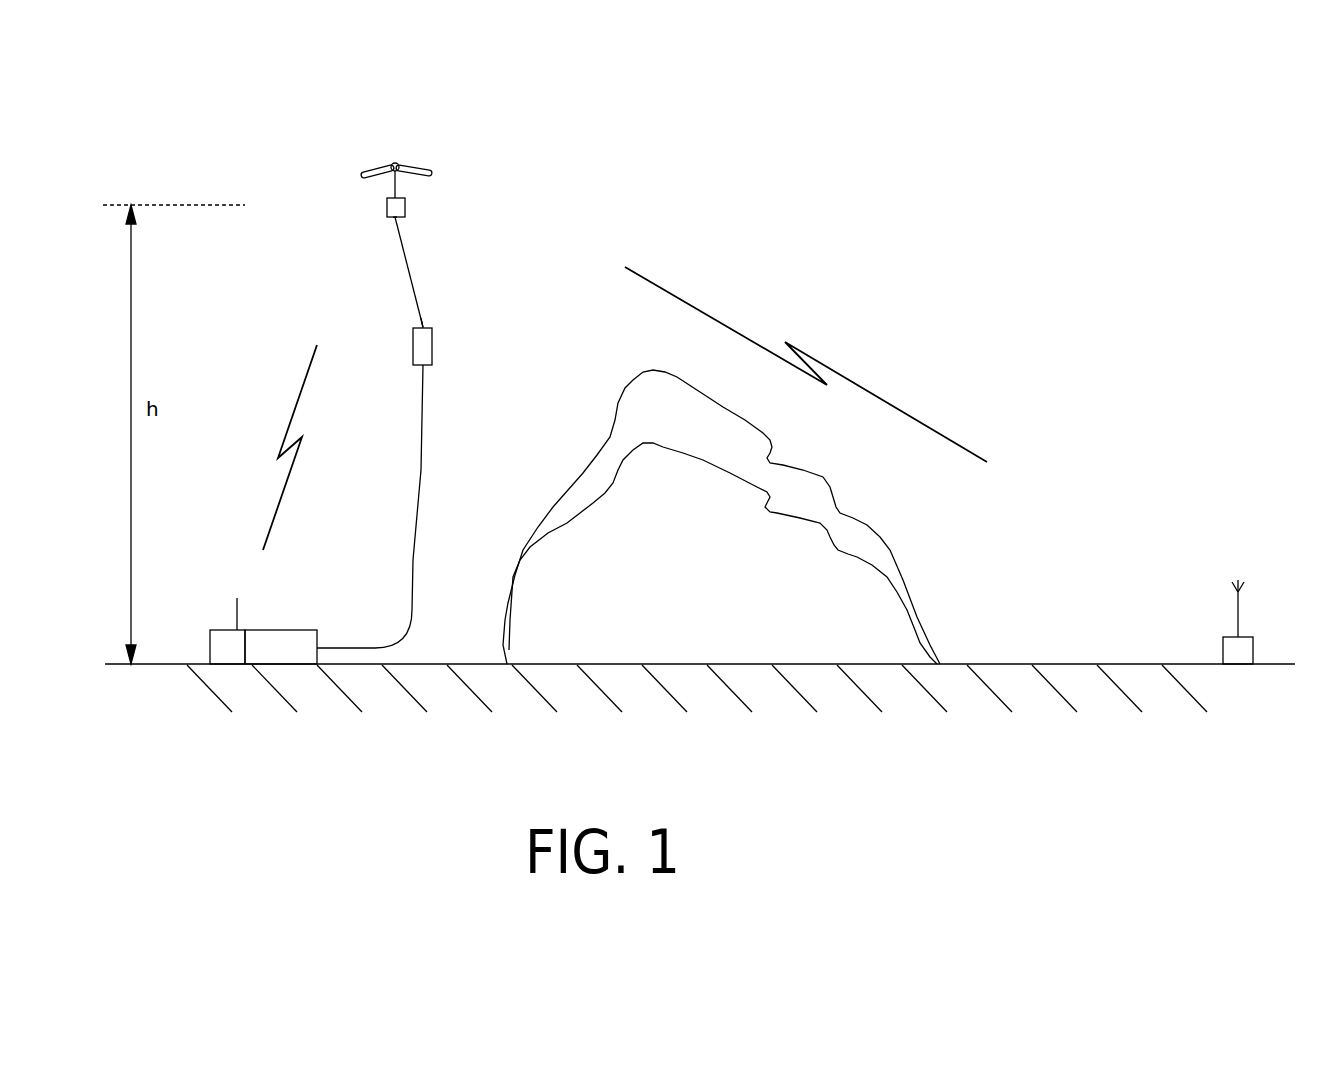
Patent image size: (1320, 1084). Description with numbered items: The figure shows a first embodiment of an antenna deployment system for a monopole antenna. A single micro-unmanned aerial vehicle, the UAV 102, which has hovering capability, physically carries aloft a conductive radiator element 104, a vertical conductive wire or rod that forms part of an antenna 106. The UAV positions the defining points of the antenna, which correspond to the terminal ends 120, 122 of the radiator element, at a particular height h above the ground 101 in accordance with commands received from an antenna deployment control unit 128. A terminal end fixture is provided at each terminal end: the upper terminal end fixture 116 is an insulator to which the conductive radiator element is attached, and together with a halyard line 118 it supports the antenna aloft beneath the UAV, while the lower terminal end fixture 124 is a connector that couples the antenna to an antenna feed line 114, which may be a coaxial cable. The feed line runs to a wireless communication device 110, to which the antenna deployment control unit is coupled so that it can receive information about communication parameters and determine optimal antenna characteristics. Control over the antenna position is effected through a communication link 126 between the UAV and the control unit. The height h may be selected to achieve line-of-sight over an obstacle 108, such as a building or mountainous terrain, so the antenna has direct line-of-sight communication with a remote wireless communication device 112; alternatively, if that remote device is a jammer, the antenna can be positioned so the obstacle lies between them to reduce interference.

The ground 101 is at (1085, 665).
The UAV 102 is at (372, 170).
The conductive radiator element 104 is at (408, 265).
The antenna 106 is at (375, 288).
The obstacle 108 is at (705, 609).
The wireless communication device 110 is at (295, 628).
The remote wireless communication device 112 is at (1245, 645).
The antenna feed line 114 is at (420, 500).
The terminal end fixture 116 is at (405, 208).
The halyard line 118 is at (393, 182).
The terminal end 120 is at (423, 327).
The terminal end 122 is at (393, 220).
The terminal end fixture 124 is at (433, 348).
The communication link 126 is at (266, 400).
The antenna deployment control unit 128 is at (220, 628).